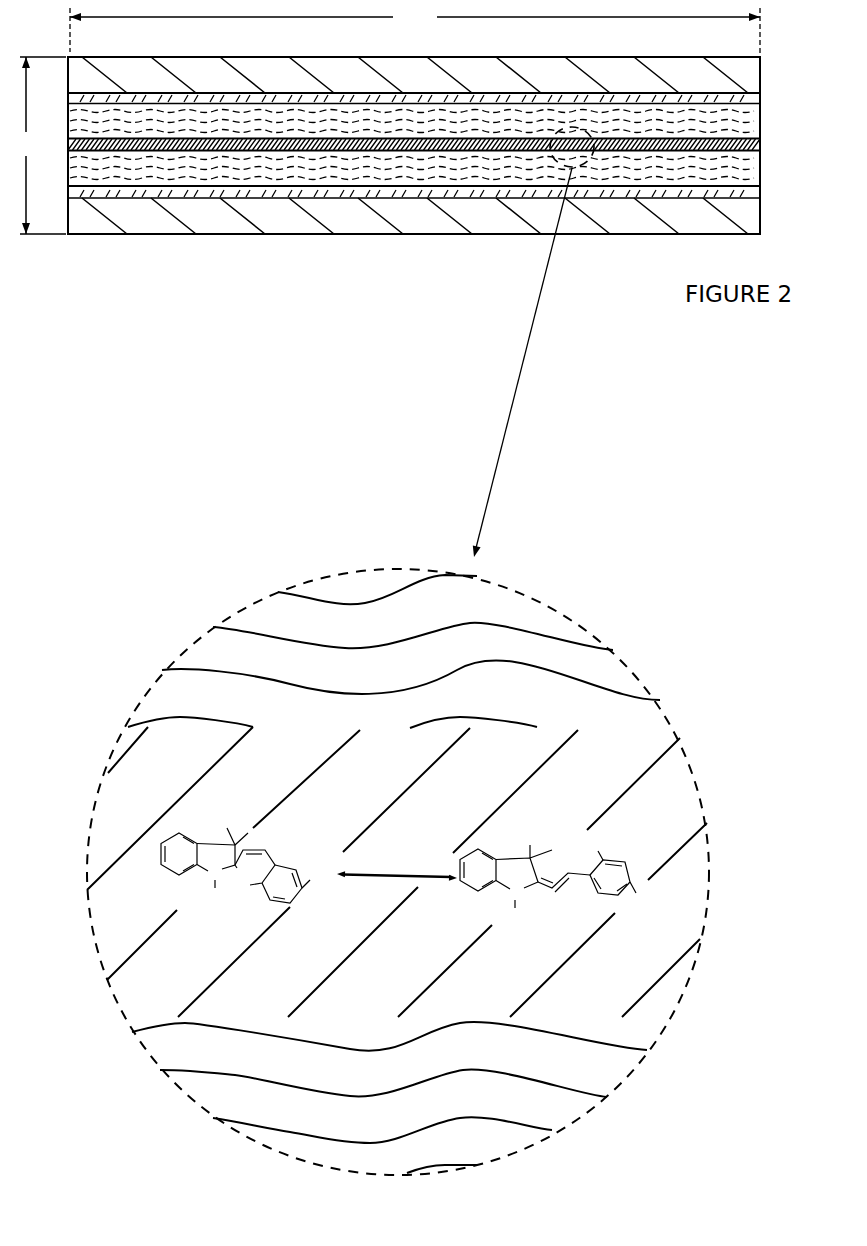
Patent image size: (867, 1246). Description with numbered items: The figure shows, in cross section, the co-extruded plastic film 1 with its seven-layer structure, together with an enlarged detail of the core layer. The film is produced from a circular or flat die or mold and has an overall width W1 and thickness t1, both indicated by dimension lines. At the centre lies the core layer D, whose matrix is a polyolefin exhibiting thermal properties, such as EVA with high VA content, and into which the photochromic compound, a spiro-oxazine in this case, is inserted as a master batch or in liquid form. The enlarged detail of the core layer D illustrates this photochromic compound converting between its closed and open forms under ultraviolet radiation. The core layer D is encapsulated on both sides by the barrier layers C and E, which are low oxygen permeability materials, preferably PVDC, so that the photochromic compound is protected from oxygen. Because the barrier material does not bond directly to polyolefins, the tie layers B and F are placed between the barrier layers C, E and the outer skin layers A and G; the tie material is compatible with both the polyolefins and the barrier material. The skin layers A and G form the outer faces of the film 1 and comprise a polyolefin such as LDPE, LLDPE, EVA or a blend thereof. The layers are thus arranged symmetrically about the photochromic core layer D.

The laminated photochromic article 1 is at (316, 218).
The skin layer A is at (768, 71).
The tie layer B is at (768, 94).
The barrier layer C is at (768, 120).
The core layer D is at (773, 146).
The barrier layer E is at (772, 170).
The tie layer F is at (772, 198).
The skin layer G is at (770, 224).
The width W1 is at (415, 30).
The thickness t1 is at (41, 145).